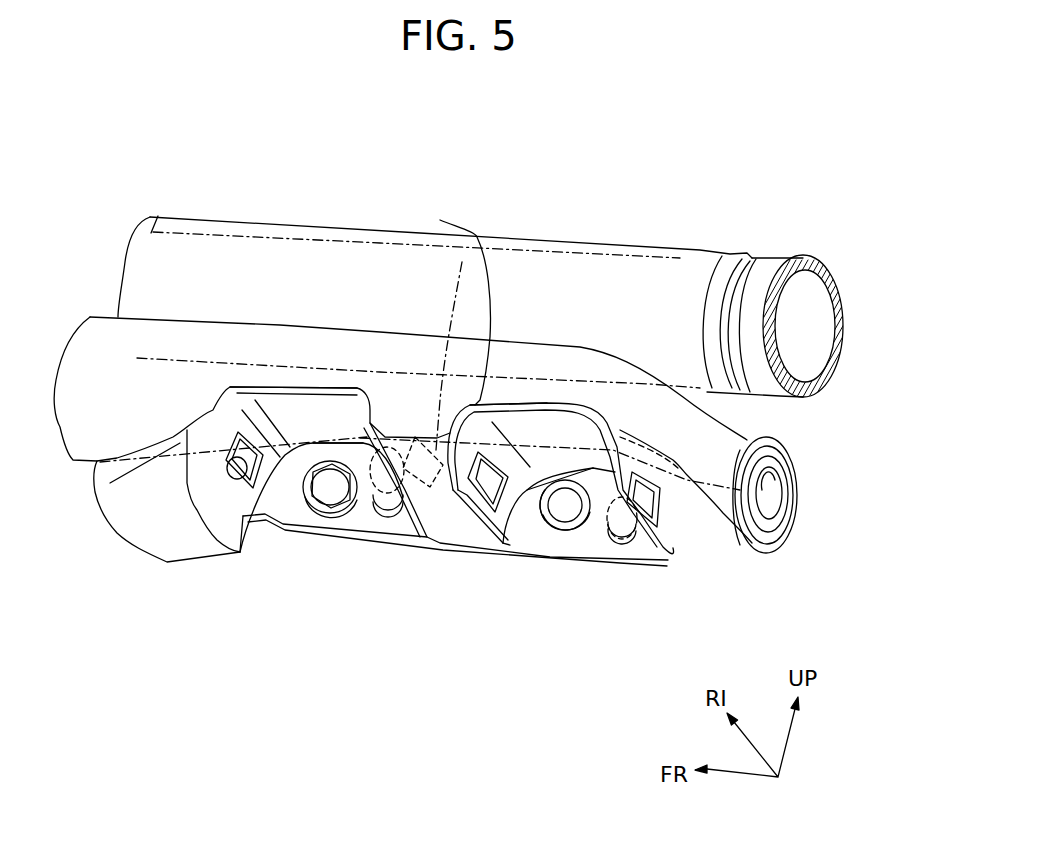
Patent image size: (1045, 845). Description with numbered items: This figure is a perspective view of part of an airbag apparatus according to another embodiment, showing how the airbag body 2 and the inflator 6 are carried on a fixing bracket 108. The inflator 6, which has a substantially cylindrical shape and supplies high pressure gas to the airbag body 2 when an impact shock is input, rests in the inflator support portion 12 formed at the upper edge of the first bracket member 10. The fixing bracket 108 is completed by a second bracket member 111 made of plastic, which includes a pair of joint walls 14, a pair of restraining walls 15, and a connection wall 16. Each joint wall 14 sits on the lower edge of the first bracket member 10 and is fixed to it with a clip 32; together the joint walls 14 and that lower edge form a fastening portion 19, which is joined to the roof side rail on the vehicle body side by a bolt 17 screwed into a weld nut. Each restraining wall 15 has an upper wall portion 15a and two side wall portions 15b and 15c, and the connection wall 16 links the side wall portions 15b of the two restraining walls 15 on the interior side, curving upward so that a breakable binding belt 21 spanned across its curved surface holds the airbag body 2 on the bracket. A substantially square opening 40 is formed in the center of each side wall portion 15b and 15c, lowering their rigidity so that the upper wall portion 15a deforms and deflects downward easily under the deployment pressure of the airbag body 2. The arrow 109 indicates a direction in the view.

The airbag body 2 is at (733, 445).
The inflator 6 is at (675, 315).
The first bracket member 10 is at (600, 221).
The inflator support portion 12 is at (283, 232).
The joint wall 14 is at (405, 568).
The restraining wall 15 is at (262, 362).
The upper wall portion 15a is at (303, 385).
The side wall portion 15b is at (413, 290).
The side wall portion 15c is at (228, 418).
The connection wall 16 is at (448, 530).
The bolt 17 is at (262, 505).
The fastening portion 19 is at (328, 527).
The binding belt 21 is at (380, 400).
The clip 32 is at (347, 528).
The opening 40 is at (262, 465).
The fixing bracket 108 is at (637, 133).
The arrow indicating exhaust direction 109 is at (740, 221).
The second bracket member 111 is at (532, 388).